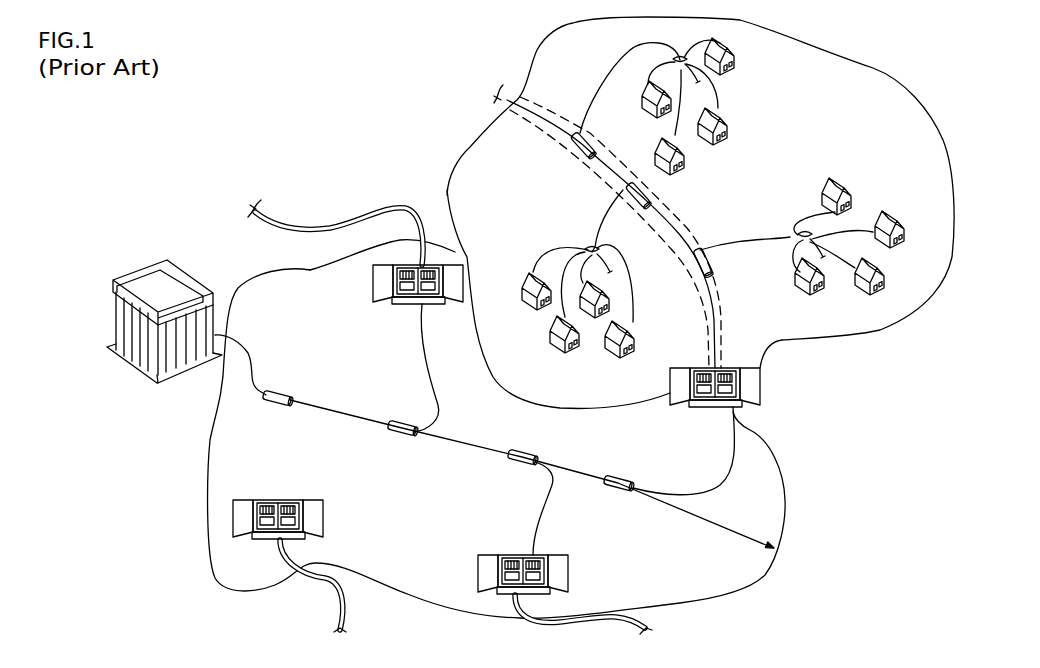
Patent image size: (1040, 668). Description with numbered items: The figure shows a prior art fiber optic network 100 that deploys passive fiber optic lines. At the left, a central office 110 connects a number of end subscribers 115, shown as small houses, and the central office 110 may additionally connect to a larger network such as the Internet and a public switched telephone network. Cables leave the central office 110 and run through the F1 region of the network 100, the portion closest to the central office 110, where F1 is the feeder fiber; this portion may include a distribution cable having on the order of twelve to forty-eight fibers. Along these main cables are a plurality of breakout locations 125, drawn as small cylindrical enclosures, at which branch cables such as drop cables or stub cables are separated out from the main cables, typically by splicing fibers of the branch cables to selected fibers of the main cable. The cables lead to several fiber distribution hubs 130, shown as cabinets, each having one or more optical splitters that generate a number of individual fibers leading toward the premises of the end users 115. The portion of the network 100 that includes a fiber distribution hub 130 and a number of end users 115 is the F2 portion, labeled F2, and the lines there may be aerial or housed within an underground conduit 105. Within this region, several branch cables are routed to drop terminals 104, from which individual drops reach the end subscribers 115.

The network 100 is at (288, 141).
The drop terminal 104 is at (678, 58).
The conduit 105 is at (722, 280).
The central office 110 is at (113, 317).
The end subscribers 115 is at (724, 123).
The breakout locations 125 is at (576, 151).
The fiber distribution hub 130 is at (448, 305).
The F1 region F1 is at (532, 469).
The F2 portion F2 is at (672, 213).